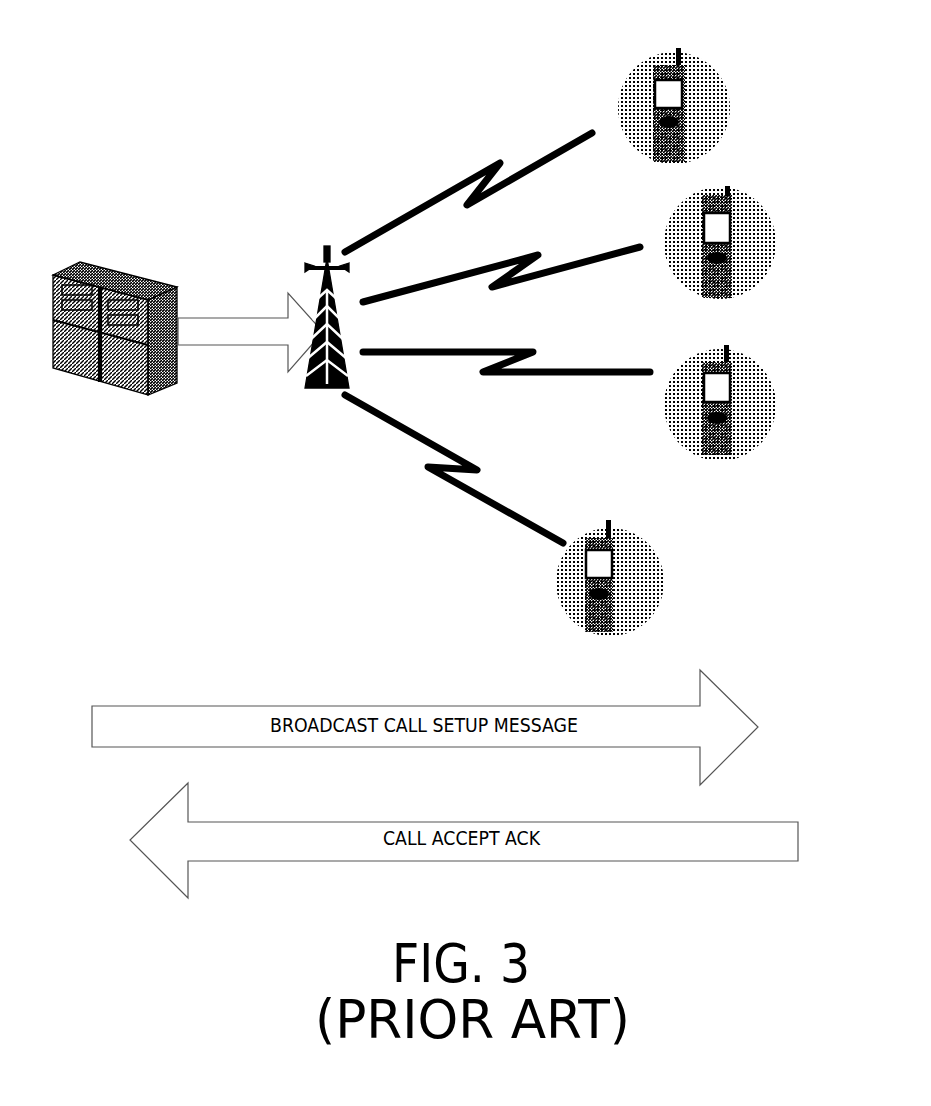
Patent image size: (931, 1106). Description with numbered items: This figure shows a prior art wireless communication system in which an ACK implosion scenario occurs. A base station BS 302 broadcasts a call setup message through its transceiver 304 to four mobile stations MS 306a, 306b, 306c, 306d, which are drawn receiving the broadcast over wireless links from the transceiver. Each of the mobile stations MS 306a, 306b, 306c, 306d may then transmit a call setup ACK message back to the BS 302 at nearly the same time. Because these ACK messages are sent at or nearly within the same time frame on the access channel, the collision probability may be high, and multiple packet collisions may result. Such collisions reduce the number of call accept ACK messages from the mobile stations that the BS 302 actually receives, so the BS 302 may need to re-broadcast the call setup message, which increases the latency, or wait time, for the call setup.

The BS 302 is at (90, 262).
The transceiver 304 is at (327, 250).
The MS 306a is at (688, 55).
The MS 306b is at (718, 195).
The MS 306c is at (728, 370).
The MS 306d is at (623, 535).